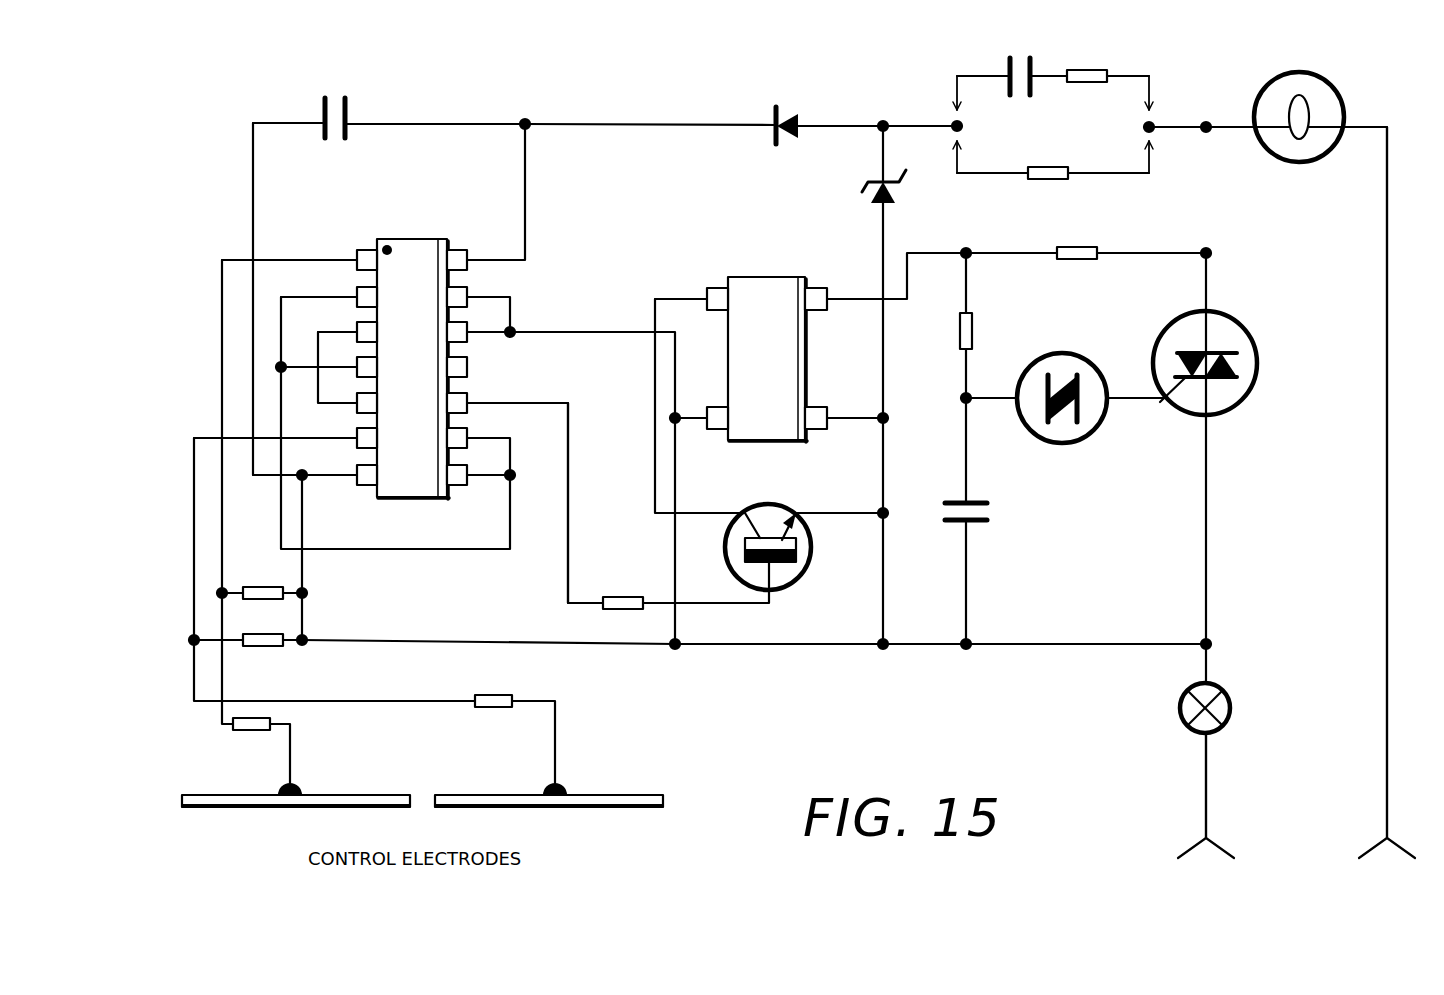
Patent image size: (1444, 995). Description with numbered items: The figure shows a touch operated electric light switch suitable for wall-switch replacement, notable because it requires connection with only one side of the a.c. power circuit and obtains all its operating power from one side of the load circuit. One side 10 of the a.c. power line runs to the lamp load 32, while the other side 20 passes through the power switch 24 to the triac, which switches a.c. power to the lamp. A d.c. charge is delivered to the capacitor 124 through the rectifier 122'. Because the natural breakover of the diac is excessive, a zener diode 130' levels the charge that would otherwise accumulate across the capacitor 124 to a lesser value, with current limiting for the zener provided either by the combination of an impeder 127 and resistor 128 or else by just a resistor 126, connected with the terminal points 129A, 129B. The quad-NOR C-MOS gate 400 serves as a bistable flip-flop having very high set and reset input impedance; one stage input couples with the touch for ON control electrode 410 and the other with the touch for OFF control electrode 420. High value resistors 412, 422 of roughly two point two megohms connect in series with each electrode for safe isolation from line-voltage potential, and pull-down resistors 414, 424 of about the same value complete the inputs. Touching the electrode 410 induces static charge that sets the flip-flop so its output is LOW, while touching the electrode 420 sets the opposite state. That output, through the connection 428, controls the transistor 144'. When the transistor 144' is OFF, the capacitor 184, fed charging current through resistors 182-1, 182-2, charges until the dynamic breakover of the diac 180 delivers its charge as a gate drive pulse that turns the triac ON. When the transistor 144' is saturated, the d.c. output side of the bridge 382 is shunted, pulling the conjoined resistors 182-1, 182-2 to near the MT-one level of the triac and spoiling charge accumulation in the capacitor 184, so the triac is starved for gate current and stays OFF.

The one side of the a.c. power line 10 is at (1389, 780).
The other side of the a.c. power line 20 is at (1199, 782).
The power switch 24 is at (1174, 703).
The lamp 32 is at (1262, 88).
The rectifier 122' is at (760, 103).
The capacitor 124 is at (315, 112).
The resistor 126 is at (1058, 163).
The impeder 127 is at (1002, 58).
The resistor 128 is at (1109, 67).
The terminal point 129A is at (1161, 118).
The terminal point 129B is at (936, 113).
The zener diode 130' is at (855, 197).
The transistor 144' is at (787, 528).
The diac 180 is at (1091, 434).
The resistor 182-1 is at (1091, 243).
The resistor 182-2 is at (976, 340).
The capacitor 184 is at (972, 532).
The bridge 382 is at (762, 292).
The quad-NOR C-MOS gate 400 is at (410, 250).
The touch for ON control electrode 410 is at (349, 792).
The high value resistor 412 is at (223, 730).
The pull-down resistor 414 is at (268, 585).
The touch for OFF control electrode 420 is at (608, 793).
The high value resistor 422 is at (505, 694).
The pull-down resistor 424 is at (252, 649).
The feedback connection 428 is at (571, 470).